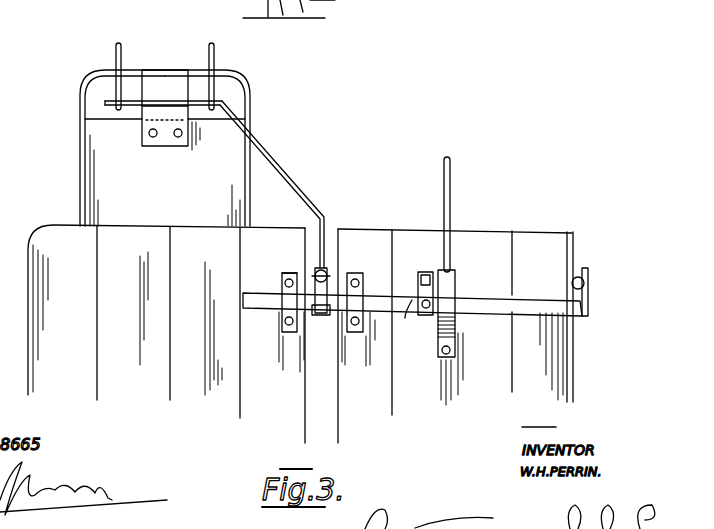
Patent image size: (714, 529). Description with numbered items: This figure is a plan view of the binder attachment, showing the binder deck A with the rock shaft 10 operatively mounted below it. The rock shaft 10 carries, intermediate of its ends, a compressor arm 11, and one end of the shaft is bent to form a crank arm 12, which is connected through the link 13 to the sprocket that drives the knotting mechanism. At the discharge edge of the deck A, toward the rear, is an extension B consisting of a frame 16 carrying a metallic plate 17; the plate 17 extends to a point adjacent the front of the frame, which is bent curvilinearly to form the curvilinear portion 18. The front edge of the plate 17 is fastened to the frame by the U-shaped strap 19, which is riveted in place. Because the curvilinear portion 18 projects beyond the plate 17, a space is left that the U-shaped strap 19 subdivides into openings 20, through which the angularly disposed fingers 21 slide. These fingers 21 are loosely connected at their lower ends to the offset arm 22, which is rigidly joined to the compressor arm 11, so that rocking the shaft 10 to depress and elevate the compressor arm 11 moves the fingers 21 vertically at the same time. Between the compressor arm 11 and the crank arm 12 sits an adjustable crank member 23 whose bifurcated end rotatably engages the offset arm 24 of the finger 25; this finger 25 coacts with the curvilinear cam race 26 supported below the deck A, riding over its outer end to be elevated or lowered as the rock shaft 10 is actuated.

The binder deck A is at (392, 213).
The extension B is at (100, 143).
The rock shaft 10 is at (484, 302).
The compressor arm 11 is at (318, 300).
The crank arm 12 is at (650, 302).
The link 13 is at (642, 282).
The frame 16 is at (248, 186).
The metallic plate 17 is at (105, 178).
The curvilinear portion 18 is at (286, 78).
The U-shaped strap 19 is at (163, 82).
The openings 20 is at (212, 115).
The angularly disposed fingers 21 is at (212, 50).
The offset arm 22 is at (272, 157).
The adjustable crank member 23 is at (418, 306).
The offset arm 24 is at (427, 272).
The finger 25 is at (450, 202).
The curvilinear cam race 26 is at (448, 290).